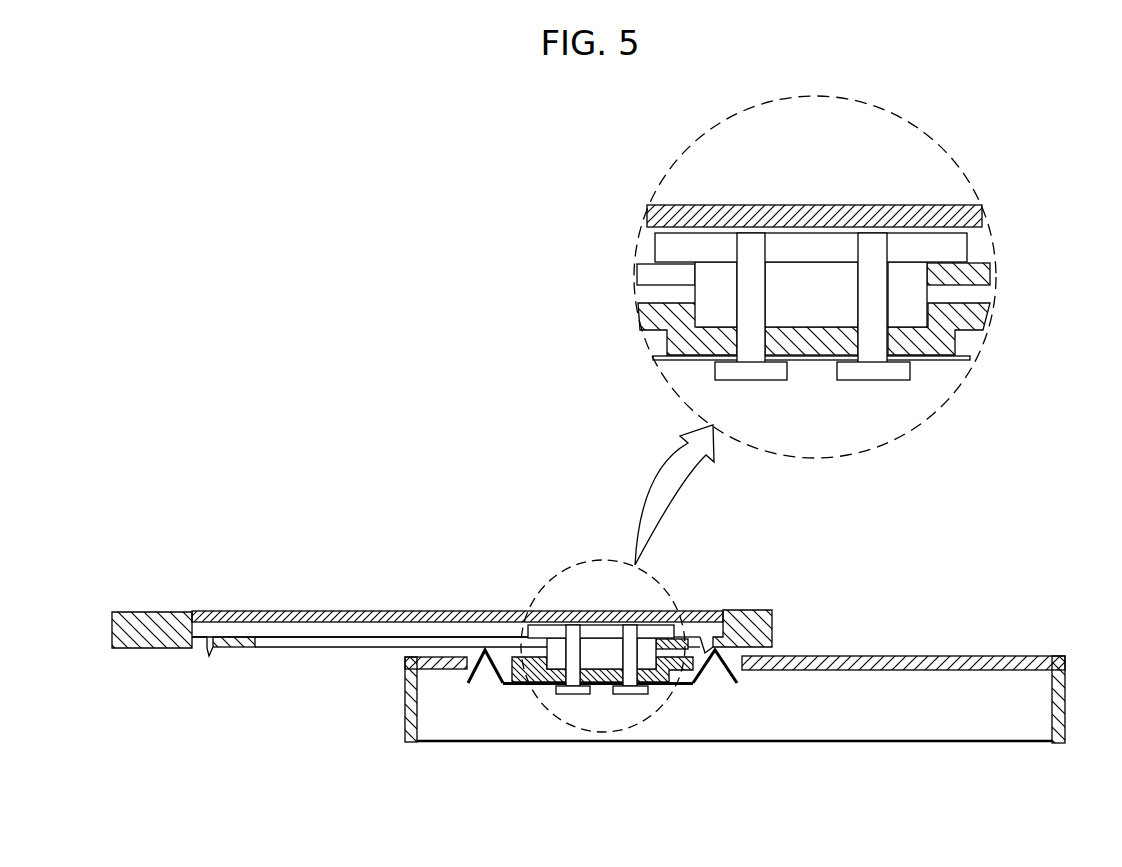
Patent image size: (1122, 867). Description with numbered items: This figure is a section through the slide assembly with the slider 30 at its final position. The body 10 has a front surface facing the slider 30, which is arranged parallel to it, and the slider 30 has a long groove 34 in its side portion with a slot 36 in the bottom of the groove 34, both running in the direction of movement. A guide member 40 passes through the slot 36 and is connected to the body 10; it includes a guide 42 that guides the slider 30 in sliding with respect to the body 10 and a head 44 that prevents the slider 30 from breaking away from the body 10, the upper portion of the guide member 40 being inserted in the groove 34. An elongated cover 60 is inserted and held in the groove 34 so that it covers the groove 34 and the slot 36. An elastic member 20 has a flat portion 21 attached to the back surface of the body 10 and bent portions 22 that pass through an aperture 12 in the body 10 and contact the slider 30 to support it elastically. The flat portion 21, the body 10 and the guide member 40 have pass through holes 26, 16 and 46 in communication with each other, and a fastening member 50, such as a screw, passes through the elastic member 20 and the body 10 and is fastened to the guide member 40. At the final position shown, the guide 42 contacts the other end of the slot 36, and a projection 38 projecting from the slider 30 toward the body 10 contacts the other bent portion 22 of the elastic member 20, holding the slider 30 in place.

The body 10 is at (405, 705).
The aperture 12 is at (717, 663).
The pass through hole 16 is at (893, 347).
The elastic member 20 is at (679, 360).
The flat portion 21 is at (685, 664).
The bent portion 22 is at (487, 668).
The pass through hole 26 is at (773, 362).
The slider 30 is at (120, 609).
The groove 34 is at (243, 627).
The slot 36 is at (650, 275).
The projection 38 is at (209, 657).
The guide member 40 is at (802, 238).
The guide 42 is at (717, 278).
The head 44 is at (653, 247).
The pass through hole 46 is at (892, 247).
The fastening member 50 is at (873, 343).
The cover 60 is at (837, 213).